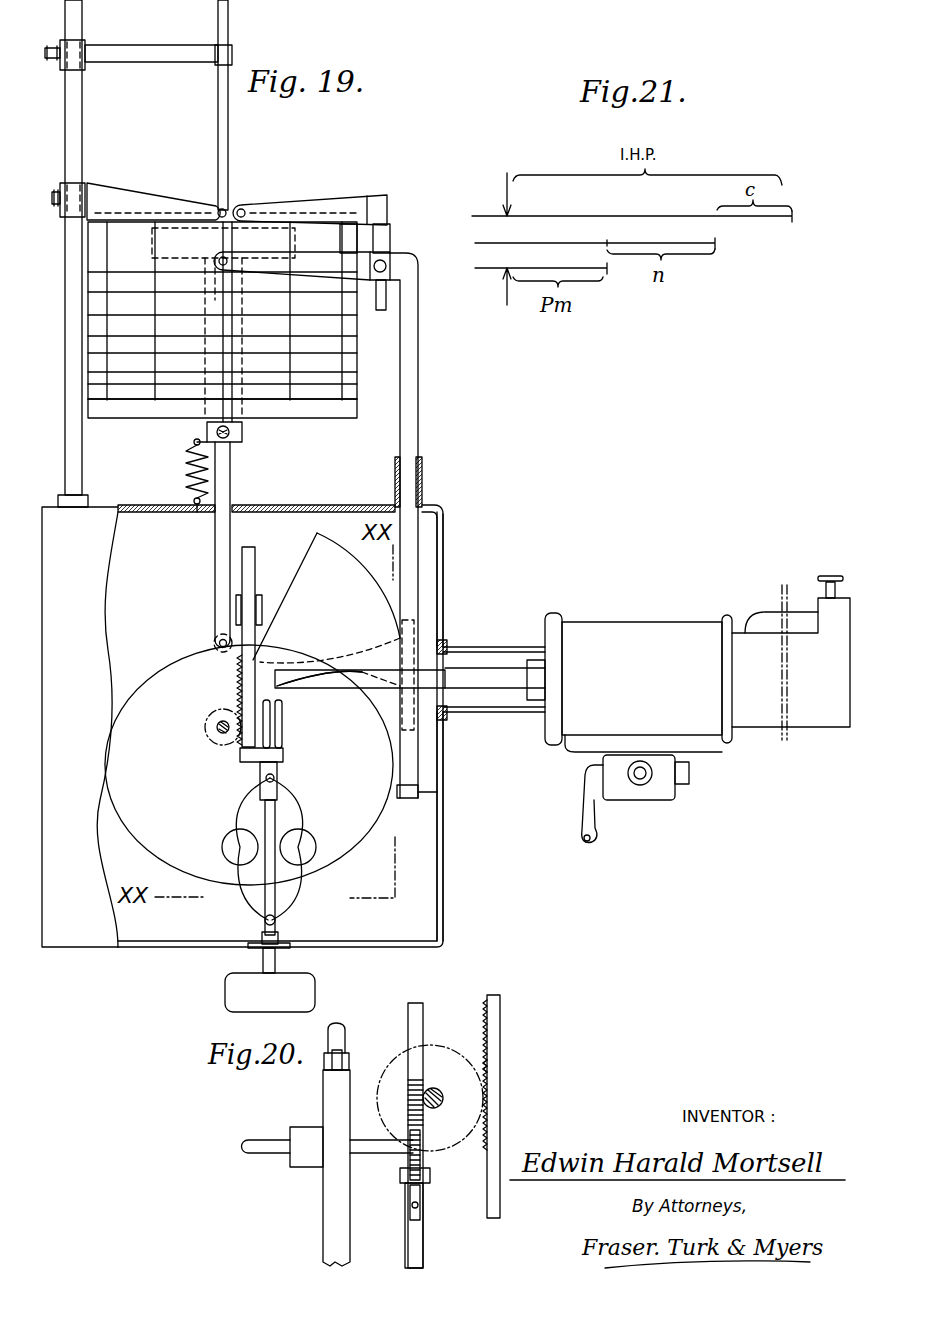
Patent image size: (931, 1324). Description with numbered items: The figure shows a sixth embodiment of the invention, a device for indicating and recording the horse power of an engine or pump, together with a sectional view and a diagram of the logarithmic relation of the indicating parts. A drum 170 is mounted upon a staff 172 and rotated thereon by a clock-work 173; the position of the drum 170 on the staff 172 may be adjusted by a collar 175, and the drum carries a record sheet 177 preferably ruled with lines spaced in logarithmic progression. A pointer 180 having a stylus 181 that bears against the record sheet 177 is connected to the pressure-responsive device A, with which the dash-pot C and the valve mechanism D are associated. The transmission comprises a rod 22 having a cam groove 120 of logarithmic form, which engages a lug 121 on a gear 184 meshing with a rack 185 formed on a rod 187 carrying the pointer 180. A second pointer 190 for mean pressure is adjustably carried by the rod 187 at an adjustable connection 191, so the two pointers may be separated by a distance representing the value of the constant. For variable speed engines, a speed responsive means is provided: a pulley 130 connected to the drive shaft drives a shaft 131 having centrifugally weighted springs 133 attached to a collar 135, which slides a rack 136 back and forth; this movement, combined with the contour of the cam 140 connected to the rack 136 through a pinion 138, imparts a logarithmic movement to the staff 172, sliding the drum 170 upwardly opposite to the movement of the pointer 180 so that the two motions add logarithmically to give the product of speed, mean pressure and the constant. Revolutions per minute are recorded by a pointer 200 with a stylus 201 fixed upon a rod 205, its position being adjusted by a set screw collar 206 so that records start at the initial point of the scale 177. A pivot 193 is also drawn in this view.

In FIG. 19, the rod 22 is at (475, 680).
In FIG. 19, the cam groove 120 is at (340, 688).
In FIG. 20, the cam groove 120 is at (435, 1088).
In FIG. 20, the lug 121 is at (440, 1106).
In FIG. 19, the pulley 130 is at (228, 990).
In FIG. 19, the shaft 131 is at (265, 812).
In FIG. 19, the centrifugally weighted springs 133 is at (240, 868).
In FIG. 20, the centrifugally weighted springs 133 is at (424, 1240).
In FIG. 19, the collar 135 is at (283, 754).
In FIG. 19, the rack 136 is at (256, 570).
In FIG. 20, the rack 136 is at (408, 1060).
In FIG. 19, the pinion 138 is at (210, 737).
In FIG. 19, the cam 140 is at (153, 672).
In FIG. 20, the cam 140 is at (323, 1190).
In FIG. 19, the drum 170 is at (95, 348).
In FIG. 19, the staff 172 is at (228, 160).
In FIG. 20, the staff 172 is at (340, 1032).
In FIG. 19, the clock-work 173 is at (268, 235).
In FIG. 19, the collar 175 is at (245, 432).
In FIG. 19, the record sheet 177 is at (128, 395).
In FIG. 19, the pointer 180 is at (390, 253).
In FIG. 19, the stylus 181 is at (219, 266).
In FIG. 19, the gear 184 is at (400, 638).
In FIG. 20, the gear 184 is at (487, 1066).
In FIG. 20, the rack 185 is at (484, 1012).
In FIG. 19, the rod 187 is at (400, 415).
In FIG. 20, the rod 187 is at (500, 1005).
In FIG. 19, the pointer 190 is at (366, 196).
In FIG. 19, the adjustable connection 191 is at (387, 268).
In FIG. 19, the pivot 193 is at (243, 209).
In FIG. 19, the pointer 200 is at (178, 176).
In FIG. 19, the stylus 201 is at (221, 209).
In FIG. 19, the rod 205 is at (80, 128).
In FIG. 19, the set screw collar 206 is at (62, 212).
In FIG. 19, the pressure-responsive device A is at (638, 668).
In FIG. 19, the dash-pot C is at (791, 644).
In FIG. 19, the valve mechanism D is at (635, 800).